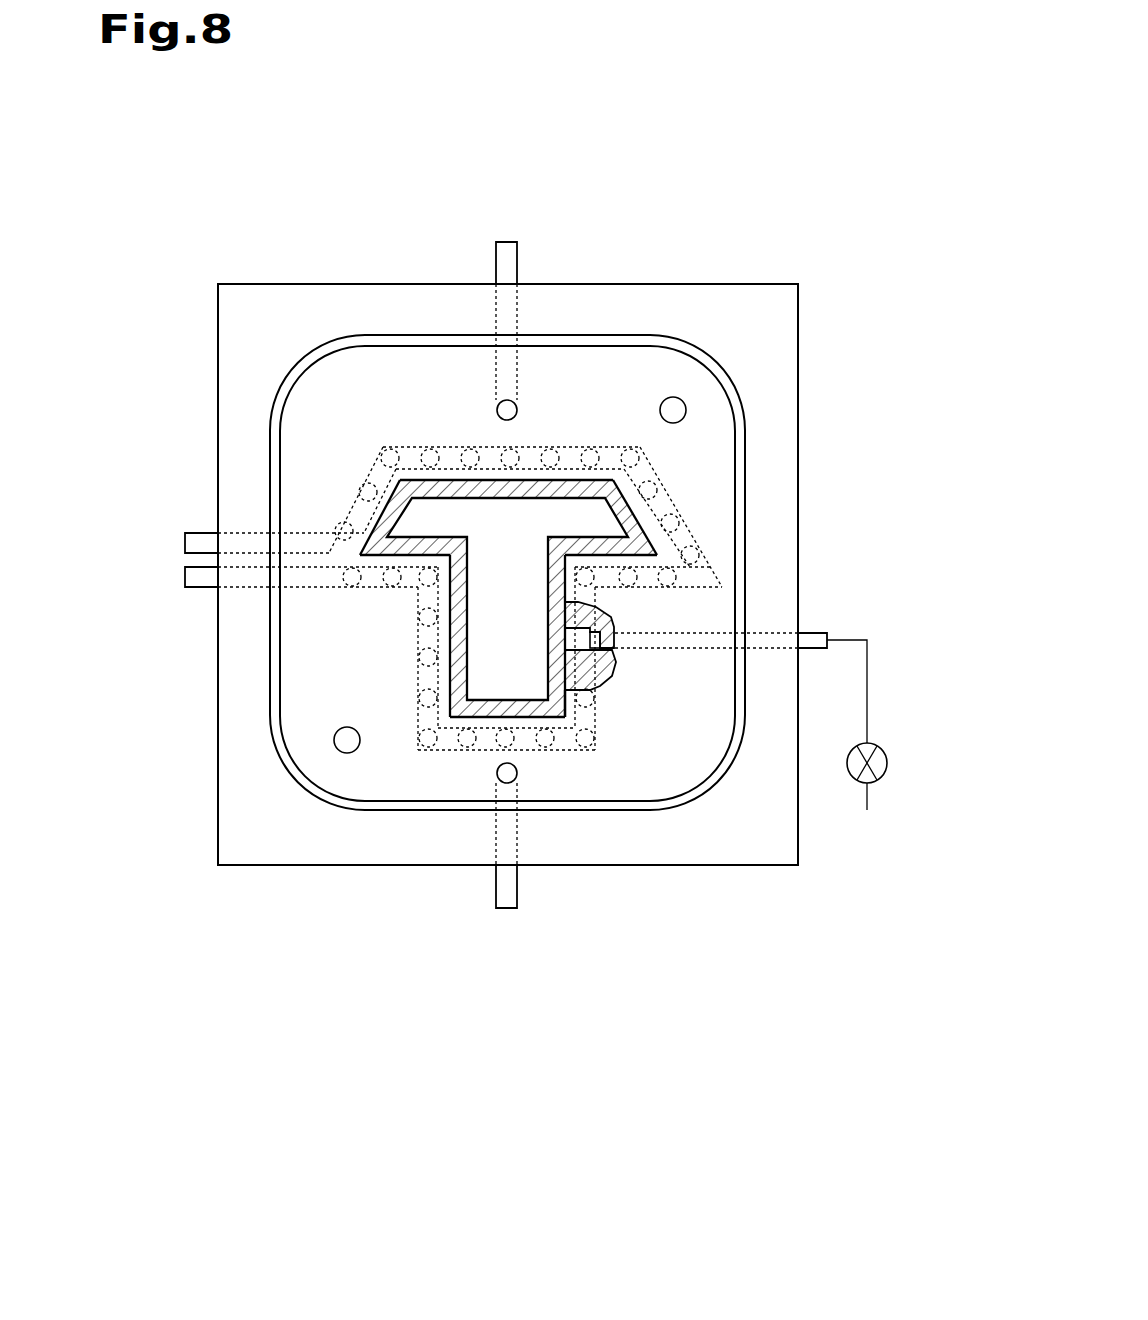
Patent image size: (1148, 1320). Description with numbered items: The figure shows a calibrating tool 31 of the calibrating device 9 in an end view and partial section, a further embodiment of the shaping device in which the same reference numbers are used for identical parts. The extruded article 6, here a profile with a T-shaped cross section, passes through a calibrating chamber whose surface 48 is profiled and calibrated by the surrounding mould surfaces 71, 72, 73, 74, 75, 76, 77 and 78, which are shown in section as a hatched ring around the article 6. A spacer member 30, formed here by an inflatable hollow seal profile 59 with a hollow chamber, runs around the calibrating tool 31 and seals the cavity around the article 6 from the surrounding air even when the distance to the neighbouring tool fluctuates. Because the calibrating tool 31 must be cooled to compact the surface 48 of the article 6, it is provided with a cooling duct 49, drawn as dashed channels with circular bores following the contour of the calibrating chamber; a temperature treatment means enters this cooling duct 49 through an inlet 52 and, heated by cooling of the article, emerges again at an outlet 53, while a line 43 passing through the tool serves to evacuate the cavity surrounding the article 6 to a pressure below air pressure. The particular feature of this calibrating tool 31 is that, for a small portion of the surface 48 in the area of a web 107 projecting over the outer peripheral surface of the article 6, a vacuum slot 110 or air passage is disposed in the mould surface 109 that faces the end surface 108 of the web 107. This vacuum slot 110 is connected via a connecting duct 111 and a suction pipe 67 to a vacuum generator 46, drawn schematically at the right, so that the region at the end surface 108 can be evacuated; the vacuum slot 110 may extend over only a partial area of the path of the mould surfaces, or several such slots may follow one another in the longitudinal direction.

The calibrating device 9 is at (755, 145).
The calibrating tool 31 is at (262, 833).
The spacer member 30 is at (357, 820).
The hollow seal profile 59 is at (428, 803).
The surface of the article 48 is at (397, 500).
The article 6 is at (383, 512).
The mould surface 77 is at (470, 478).
The mould surface 75 is at (392, 515).
The mould surface 78 is at (617, 492).
The mould surface 76 is at (385, 483).
The mould surface 71 is at (567, 590).
The mould surface 74 is at (458, 670).
The mould surface 72 is at (565, 588).
The mould surface 73 is at (548, 717).
The mould surface 109 is at (613, 618).
The vacuum slot 110 is at (612, 630).
The end surface 108 is at (615, 680).
The web 107 is at (566, 690).
The connecting duct 111 is at (660, 638).
The suction pipe 67 is at (867, 648).
The vacuum generator 46 is at (882, 748).
The line 43 is at (510, 262).
The inlet 52 is at (203, 543).
The outlet 53 is at (200, 577).
The cooling duct 49 is at (443, 447).